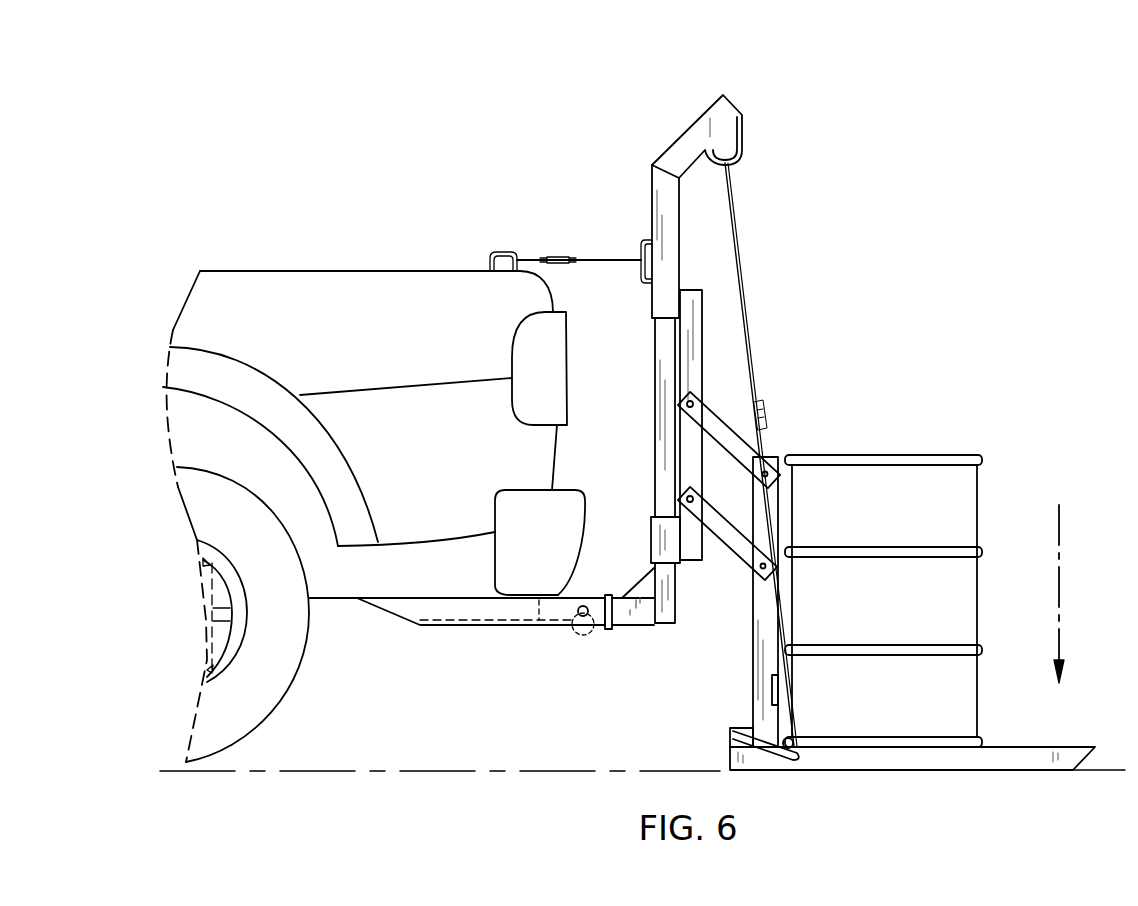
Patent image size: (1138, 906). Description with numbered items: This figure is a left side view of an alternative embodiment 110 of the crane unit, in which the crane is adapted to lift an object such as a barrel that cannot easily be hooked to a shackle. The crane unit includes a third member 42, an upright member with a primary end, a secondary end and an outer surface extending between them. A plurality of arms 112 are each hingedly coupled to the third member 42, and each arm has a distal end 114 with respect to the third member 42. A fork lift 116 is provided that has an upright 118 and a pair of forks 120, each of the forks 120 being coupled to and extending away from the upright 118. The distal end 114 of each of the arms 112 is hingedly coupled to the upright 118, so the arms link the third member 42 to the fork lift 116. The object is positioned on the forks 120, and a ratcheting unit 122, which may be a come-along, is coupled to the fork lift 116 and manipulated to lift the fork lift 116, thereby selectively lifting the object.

The alternative embodiment 110 is at (565, 152).
The third member 42 is at (702, 337).
The arms 112 is at (713, 505).
The distal end 114 is at (777, 485).
The fork lift 116 is at (698, 705).
The upright 118 is at (767, 657).
The forks 120 is at (1023, 768).
The ratcheting unit 122 is at (737, 222).